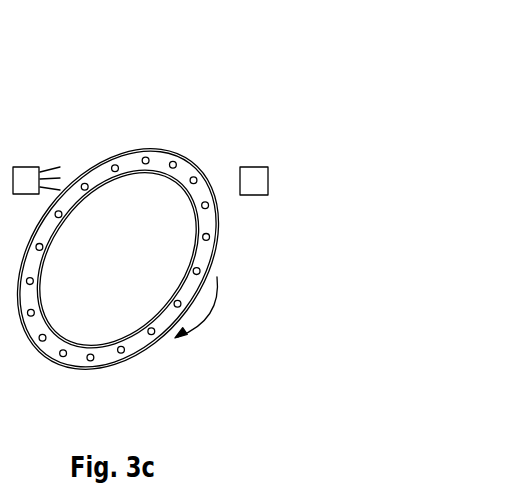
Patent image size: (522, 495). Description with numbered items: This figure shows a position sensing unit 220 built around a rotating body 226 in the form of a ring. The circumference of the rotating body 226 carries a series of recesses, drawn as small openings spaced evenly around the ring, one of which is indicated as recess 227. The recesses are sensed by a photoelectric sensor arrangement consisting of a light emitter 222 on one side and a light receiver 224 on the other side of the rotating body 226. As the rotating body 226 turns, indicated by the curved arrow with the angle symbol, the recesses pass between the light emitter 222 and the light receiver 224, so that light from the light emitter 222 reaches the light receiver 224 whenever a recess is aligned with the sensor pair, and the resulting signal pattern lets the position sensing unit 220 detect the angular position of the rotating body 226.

The position sensing unit 220 is at (212, 90).
The light emitter 222 is at (32, 170).
The light receiver 224 is at (258, 195).
The rotating body 226 is at (201, 192).
The marker hole 227 is at (153, 335).